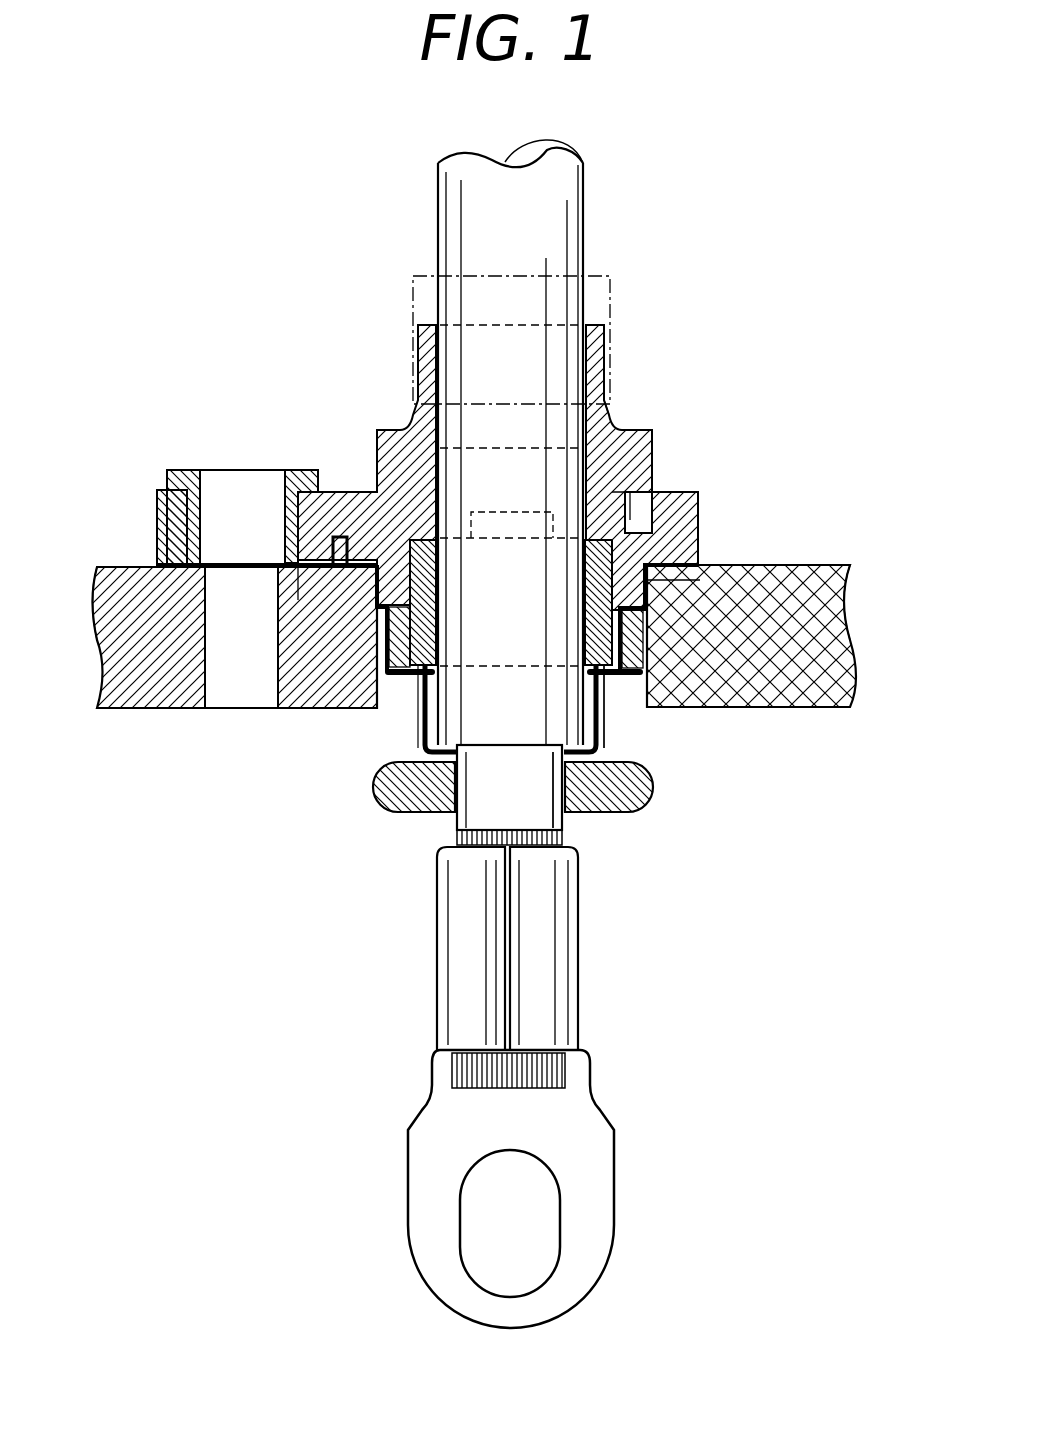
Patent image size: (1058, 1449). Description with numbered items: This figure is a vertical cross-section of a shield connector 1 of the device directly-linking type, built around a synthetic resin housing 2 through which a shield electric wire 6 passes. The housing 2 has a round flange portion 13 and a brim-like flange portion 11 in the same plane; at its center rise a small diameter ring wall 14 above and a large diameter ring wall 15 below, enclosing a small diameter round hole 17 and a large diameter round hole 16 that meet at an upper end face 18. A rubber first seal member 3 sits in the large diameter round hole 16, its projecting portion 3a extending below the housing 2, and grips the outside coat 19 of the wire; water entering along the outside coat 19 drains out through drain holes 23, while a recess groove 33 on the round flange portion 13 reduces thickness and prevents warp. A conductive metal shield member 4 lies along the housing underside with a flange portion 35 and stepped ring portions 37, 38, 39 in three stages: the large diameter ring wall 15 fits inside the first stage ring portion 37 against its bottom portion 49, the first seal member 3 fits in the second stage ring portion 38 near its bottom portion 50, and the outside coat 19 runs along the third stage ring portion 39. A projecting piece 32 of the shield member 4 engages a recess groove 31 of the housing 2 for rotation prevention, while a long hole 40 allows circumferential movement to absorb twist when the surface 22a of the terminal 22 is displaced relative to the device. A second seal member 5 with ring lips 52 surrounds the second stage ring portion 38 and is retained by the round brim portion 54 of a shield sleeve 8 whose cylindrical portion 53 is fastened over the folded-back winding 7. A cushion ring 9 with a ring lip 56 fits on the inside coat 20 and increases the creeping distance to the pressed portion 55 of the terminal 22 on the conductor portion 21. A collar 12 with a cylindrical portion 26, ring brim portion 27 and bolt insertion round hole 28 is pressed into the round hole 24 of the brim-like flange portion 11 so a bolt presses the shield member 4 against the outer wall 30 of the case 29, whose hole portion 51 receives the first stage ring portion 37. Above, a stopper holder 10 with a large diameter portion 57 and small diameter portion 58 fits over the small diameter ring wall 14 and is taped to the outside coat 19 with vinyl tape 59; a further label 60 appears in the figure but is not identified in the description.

The shield connector 1 is at (730, 365).
The housing 2 is at (708, 490).
The first seal member 3 is at (692, 548).
The projecting portion 3a is at (633, 710).
The shield member 4 is at (652, 575).
The second seal member 5 is at (810, 695).
The shield electric wire 6 is at (588, 237).
The winding 7 is at (600, 752).
The shield sleeve 8 is at (610, 725).
The cushion ring 9 is at (633, 812).
The stopper holder 10 is at (614, 412).
The brim-like flange portion 11 is at (155, 530).
The collar 12 is at (300, 465).
The round flange portion 13 is at (700, 510).
The small diameter ring wall 14 is at (608, 436).
The large diameter ring wall 15 is at (720, 615).
The large diameter round hole 16 is at (350, 670).
The small diameter round hole 17 is at (645, 505).
The upper end face 18 is at (437, 567).
The outside coat 19 is at (565, 348).
The inside coat 20 is at (457, 825).
The conductor portion 21 is at (458, 845).
The terminal 22 is at (412, 1135).
The surface of the terminal 22a is at (582, 1237).
The drain holes 23 is at (500, 520).
The round hole 24 is at (255, 485).
The cylindrical portion 26 is at (140, 610).
The ring brim portion 27 is at (172, 500).
The round hole 28 is at (258, 480).
The case 29 is at (848, 565).
The outer wall 30 is at (805, 710).
The recess groove 31 is at (340, 532).
The projecting piece 32 is at (300, 660).
The recess groove 33 is at (672, 482).
The flange portion 35 is at (702, 557).
The ring portion at the first stage 37 is at (760, 590).
The ring portion at the second stage 38 is at (700, 690).
The ring portion at the third stage 39 is at (432, 722).
The long hole 40 is at (215, 610).
The bottom portion 49 is at (437, 627).
The bottom portion 50 is at (430, 678).
The hole portion 51 is at (398, 705).
The ring lips 52 is at (650, 650).
The cylindrical portion 53 is at (425, 750).
The round brim portion 54 is at (413, 735).
The pressed portion 55 is at (465, 985).
The ring lip 56 is at (560, 812).
The large diameter portion 57 is at (382, 468).
The small diameter portion 58 is at (418, 343).
The vinyl tape 59 is at (612, 290).
The bore 60 is at (243, 690).